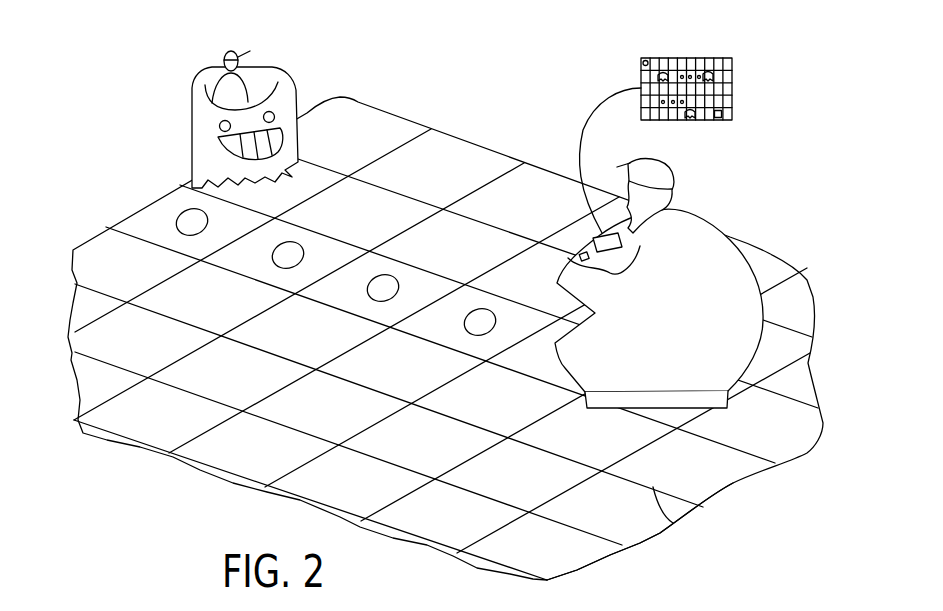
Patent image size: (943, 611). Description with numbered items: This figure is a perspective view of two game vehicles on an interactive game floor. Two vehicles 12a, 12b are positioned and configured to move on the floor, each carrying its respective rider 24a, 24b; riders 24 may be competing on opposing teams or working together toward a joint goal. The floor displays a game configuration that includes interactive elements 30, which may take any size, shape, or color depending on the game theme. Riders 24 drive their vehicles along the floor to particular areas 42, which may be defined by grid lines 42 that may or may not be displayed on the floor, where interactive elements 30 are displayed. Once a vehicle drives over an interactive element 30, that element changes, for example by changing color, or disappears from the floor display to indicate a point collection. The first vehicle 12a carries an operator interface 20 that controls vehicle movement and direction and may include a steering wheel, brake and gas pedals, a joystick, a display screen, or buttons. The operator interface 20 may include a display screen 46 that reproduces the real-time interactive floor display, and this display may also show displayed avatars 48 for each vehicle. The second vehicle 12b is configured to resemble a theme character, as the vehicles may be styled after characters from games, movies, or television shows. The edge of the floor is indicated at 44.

The vehicle rider 24 is at (143, 45).
The rider 24a is at (671, 172).
The rider 24b is at (225, 52).
The vehicle 12a is at (721, 226).
The vehicle 12b is at (192, 150).
The operator interface 20 is at (592, 240).
The interactive element 30 is at (401, 290).
The area 42 is at (369, 265).
The floor boundary corner 44 is at (673, 525).
The display screen 46 is at (674, 57).
The displayed avatar 48 is at (713, 77).